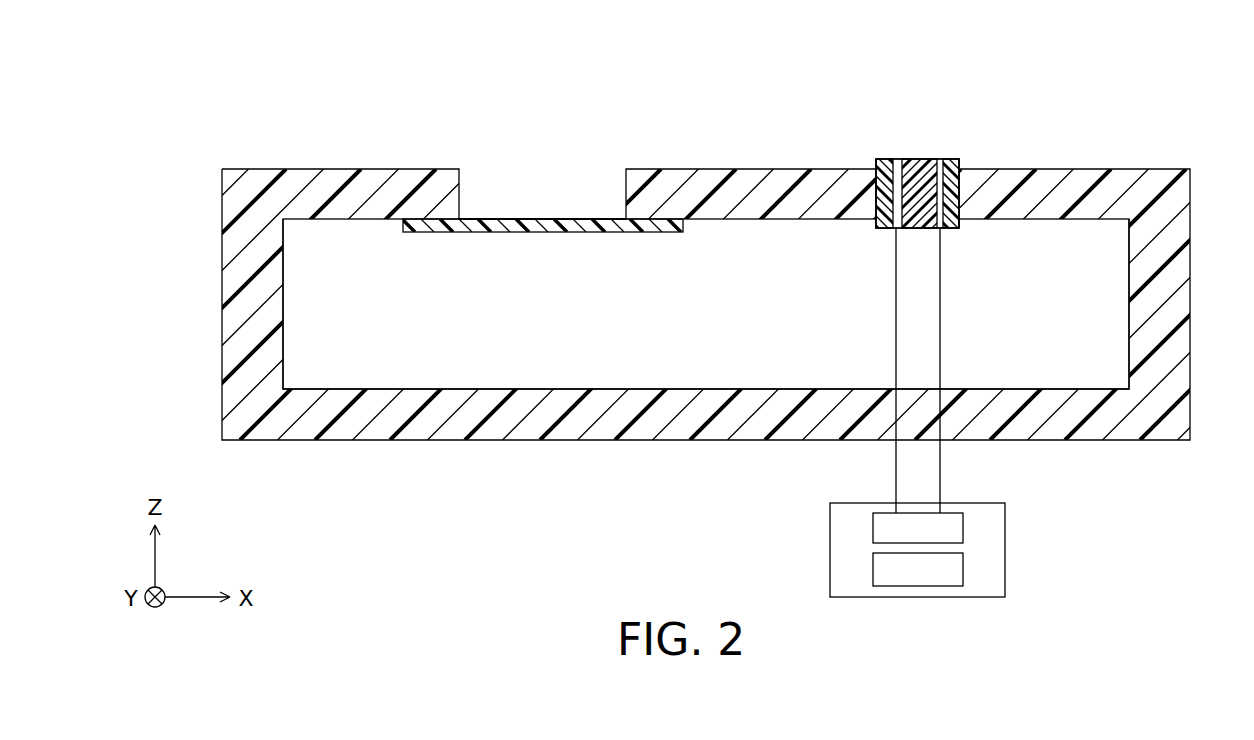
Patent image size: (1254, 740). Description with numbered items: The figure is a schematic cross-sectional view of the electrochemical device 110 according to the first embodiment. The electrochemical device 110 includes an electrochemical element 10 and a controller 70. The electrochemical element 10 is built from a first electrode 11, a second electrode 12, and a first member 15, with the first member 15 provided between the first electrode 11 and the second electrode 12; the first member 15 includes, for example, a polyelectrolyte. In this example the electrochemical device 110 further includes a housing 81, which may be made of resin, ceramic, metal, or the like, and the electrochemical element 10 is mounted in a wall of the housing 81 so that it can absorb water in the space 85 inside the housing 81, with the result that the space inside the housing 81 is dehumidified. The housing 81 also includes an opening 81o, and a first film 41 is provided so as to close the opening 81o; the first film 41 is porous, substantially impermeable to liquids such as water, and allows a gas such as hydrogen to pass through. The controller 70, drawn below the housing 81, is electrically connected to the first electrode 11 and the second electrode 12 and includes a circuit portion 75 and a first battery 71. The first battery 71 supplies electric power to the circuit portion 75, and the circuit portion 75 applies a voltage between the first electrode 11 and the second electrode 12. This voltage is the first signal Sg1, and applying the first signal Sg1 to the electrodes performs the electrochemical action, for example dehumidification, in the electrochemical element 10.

The electrochemical element 10 is at (918, 135).
The first electrode 11 is at (953, 161).
The second electrode 12 is at (882, 160).
The first member 15 is at (925, 160).
The first film 41 is at (510, 219).
The controller 70 is at (927, 550).
The first battery 71 is at (873, 565).
The circuit portion 75 is at (873, 520).
The housing 81 is at (1155, 433).
The opening 81o is at (626, 191).
The space 85 is at (1013, 220).
The electrochemical device 110 is at (1147, 130).
The first signal Sg1 is at (944, 480).